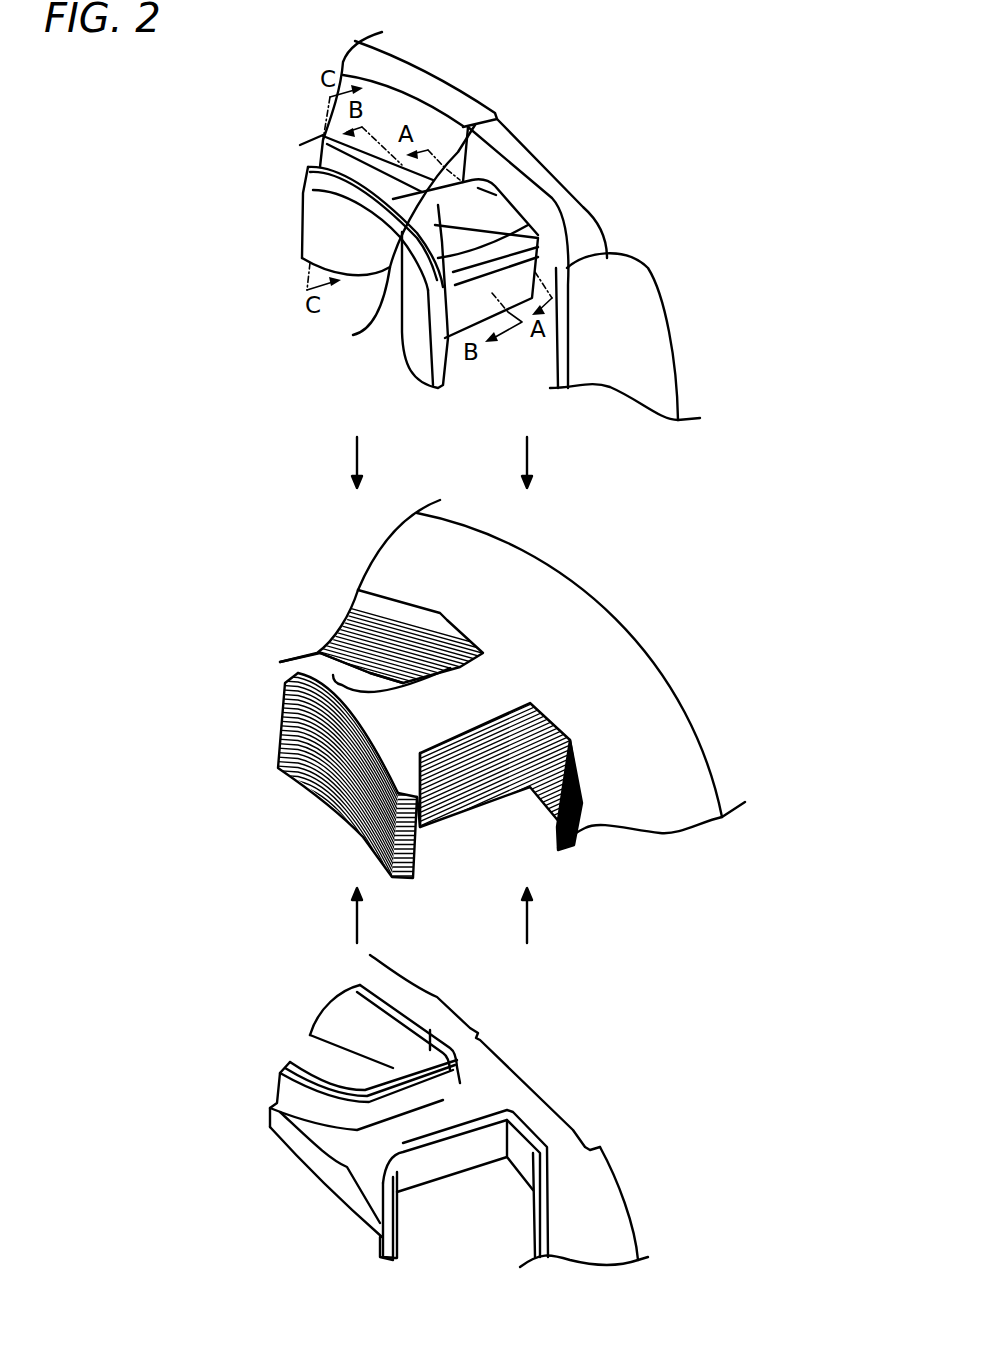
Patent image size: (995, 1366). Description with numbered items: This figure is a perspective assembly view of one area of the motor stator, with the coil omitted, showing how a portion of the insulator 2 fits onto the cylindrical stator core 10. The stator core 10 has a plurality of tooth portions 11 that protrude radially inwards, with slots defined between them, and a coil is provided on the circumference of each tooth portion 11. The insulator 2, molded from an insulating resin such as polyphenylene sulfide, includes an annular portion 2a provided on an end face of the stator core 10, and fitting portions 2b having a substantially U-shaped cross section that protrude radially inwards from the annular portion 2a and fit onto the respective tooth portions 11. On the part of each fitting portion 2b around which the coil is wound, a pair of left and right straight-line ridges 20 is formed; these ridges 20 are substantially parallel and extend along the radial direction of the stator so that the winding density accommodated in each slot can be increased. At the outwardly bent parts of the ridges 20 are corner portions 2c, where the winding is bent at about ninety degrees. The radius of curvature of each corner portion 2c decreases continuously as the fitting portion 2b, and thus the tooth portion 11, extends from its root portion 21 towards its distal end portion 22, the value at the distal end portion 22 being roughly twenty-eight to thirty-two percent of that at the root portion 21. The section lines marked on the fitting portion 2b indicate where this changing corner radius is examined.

The insulator 2 is at (578, 153).
The annular portion 2a is at (620, 260).
The fitting portion 2b is at (413, 1122).
The corner portion 2c is at (507, 250).
The ridge 20 is at (353, 1130).
The stator core 10 is at (650, 621).
The tooth portion 11 is at (363, 715).
The root portion 21 is at (556, 268).
The distal end portion 22 is at (313, 231).